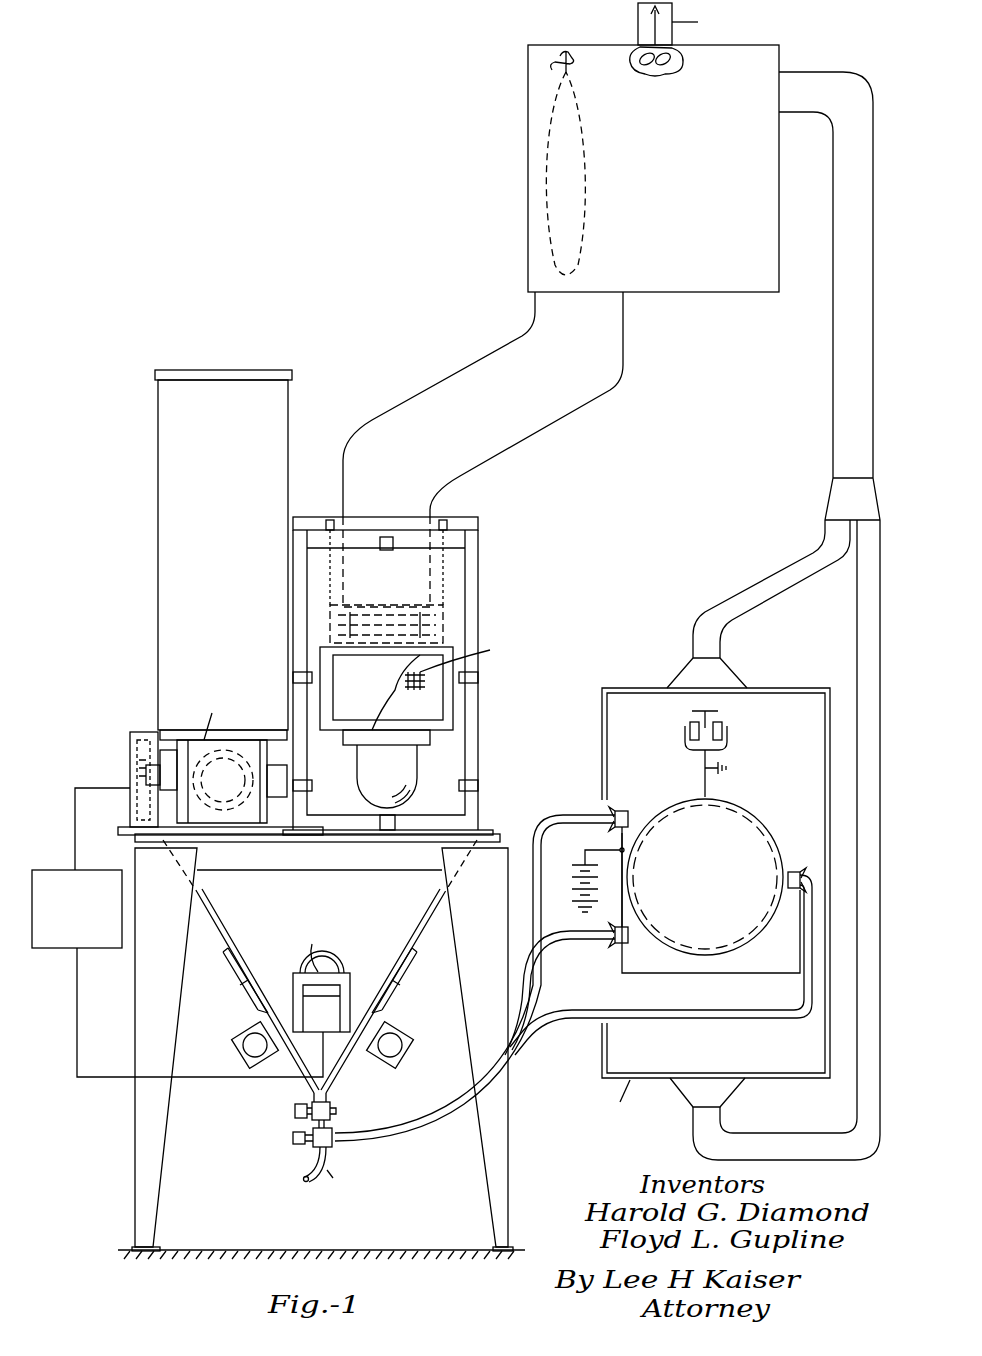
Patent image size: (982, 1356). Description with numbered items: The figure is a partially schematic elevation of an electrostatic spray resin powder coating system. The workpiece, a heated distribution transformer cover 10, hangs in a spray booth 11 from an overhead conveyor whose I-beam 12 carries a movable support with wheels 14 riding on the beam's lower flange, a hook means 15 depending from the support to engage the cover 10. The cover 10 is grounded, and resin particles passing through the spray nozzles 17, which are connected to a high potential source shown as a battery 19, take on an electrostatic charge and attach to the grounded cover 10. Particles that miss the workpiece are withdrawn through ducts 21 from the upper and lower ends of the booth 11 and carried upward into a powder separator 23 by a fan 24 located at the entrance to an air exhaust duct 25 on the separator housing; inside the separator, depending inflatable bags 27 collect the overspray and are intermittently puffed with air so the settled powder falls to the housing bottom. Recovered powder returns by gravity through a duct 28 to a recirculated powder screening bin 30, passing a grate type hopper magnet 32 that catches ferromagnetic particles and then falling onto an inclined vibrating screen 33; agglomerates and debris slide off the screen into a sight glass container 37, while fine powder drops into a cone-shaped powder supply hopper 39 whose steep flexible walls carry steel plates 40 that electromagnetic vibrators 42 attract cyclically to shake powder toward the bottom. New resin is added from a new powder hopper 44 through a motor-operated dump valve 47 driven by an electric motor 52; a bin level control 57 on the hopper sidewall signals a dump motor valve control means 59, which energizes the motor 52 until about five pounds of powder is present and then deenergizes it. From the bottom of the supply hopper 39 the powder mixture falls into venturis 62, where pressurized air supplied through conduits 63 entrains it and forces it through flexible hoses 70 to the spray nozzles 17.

The distribution transformer cover 10 is at (741, 932).
The spray booth 11 is at (788, 688).
The I-beam 12 is at (719, 711).
The wheels 14 is at (690, 734).
The hook means 15 is at (736, 806).
The spray nozzles 17 is at (628, 810).
The battery 19 is at (578, 866).
The ducts 21 is at (748, 583).
The powder separator 23 is at (692, 292).
The fan 24 is at (676, 65).
The air exhaust duct 25 is at (638, 22).
The inflatable bags 27 is at (582, 222).
The duct 28 is at (530, 412).
The recirculated powder screening bin 30 is at (478, 523).
The grate type hopper magnet 32 is at (448, 628).
The inclined vibrating screen 33 is at (423, 690).
The sight glass container 37 is at (410, 792).
The powder supply hopper 39 is at (396, 975).
The steel plates 40 is at (252, 1008).
The electromagnetic vibrators 42 is at (240, 1052).
The new powder hopper 44 is at (242, 607).
The motor-operated dump valve 47 is at (256, 752).
The electric motor 52 is at (226, 825).
The bin level control 57 is at (297, 998).
The dump motor valve control means 59 is at (36, 948).
The venturis 62 is at (302, 1157).
The conduits 63 is at (307, 1183).
The flexible hoses 70 is at (566, 816).